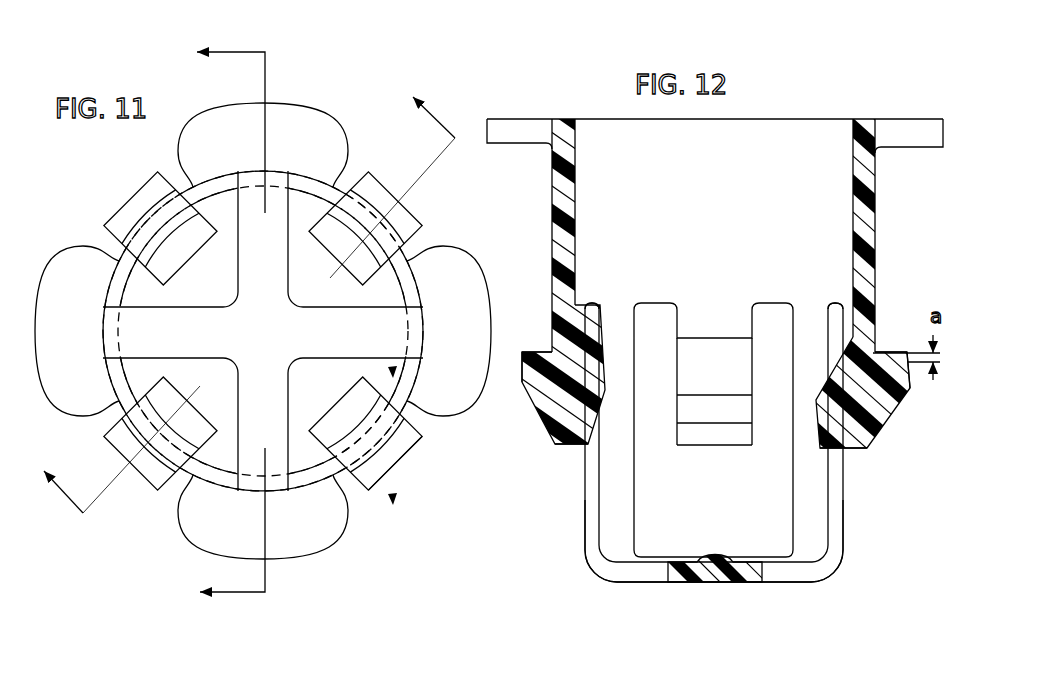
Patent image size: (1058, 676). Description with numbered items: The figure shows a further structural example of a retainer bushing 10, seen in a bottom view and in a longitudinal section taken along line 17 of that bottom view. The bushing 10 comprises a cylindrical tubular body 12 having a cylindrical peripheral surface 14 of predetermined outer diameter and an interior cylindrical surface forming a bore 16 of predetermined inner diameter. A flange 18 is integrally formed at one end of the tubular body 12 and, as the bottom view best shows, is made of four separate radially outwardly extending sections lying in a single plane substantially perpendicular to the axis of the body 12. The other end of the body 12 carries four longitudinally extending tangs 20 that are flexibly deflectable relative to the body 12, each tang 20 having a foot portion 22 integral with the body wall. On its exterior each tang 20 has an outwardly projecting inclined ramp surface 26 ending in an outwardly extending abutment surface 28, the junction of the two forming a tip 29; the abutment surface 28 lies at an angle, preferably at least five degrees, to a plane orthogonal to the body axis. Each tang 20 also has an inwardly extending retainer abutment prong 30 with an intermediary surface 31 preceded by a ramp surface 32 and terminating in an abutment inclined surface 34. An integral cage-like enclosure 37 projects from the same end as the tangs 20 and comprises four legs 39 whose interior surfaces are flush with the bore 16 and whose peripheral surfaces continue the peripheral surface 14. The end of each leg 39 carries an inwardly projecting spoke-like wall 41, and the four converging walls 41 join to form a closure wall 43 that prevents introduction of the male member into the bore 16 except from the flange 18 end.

In FIG. 11, the retainer bushing 10 is at (350, 116).
In FIG. 12, the retainer bushing 10 is at (883, 113).
In FIG. 11, the cylindrical tubular body 12 is at (436, 464).
In FIG. 12, the cylindrical tubular body 12 is at (553, 233).
In FIG. 11, the cylindrical peripheral surface 14 is at (398, 263).
In FIG. 12, the cylindrical peripheral surface 14 is at (556, 258).
In FIG. 11, the bore 16 is at (185, 474).
In FIG. 12, the bore 16 is at (577, 177).
In FIG. 11, the section line 17 is at (254, 328).
In FIG. 11, the flange 18 is at (293, 121).
In FIG. 12, the flange 18 is at (527, 119).
In FIG. 11, the tangs 20 is at (390, 480).
In FIG. 12, the tangs 20 is at (547, 449).
In FIG. 12, the foot portion 22 is at (566, 316).
In FIG. 11, the ramp surface 26 is at (132, 204).
In FIG. 12, the ramp surface 26 is at (541, 423).
In FIG. 12, the abutment surface 28 is at (528, 350).
In FIG. 12, the tip 29 is at (522, 354).
In FIG. 12, the retainer abutment prong 30 is at (605, 398).
In FIG. 12, the intermediary surface 31 is at (687, 413).
In FIG. 12, the ramp surface 32 is at (605, 325).
In FIG. 11, the abutment inclined surface 34 is at (176, 247).
In FIG. 12, the abutment inclined surface 34 is at (603, 433).
In FIG. 11, the cage-like enclosure 37 is at (392, 373).
In FIG. 12, the legs 39 is at (590, 536).
In FIG. 11, the spoke-like walls 41 is at (175, 318).
In FIG. 12, the spoke-like walls 41 is at (643, 574).
In FIG. 11, the closure wall 43 is at (322, 342).
In FIG. 12, the closure wall 43 is at (740, 587).